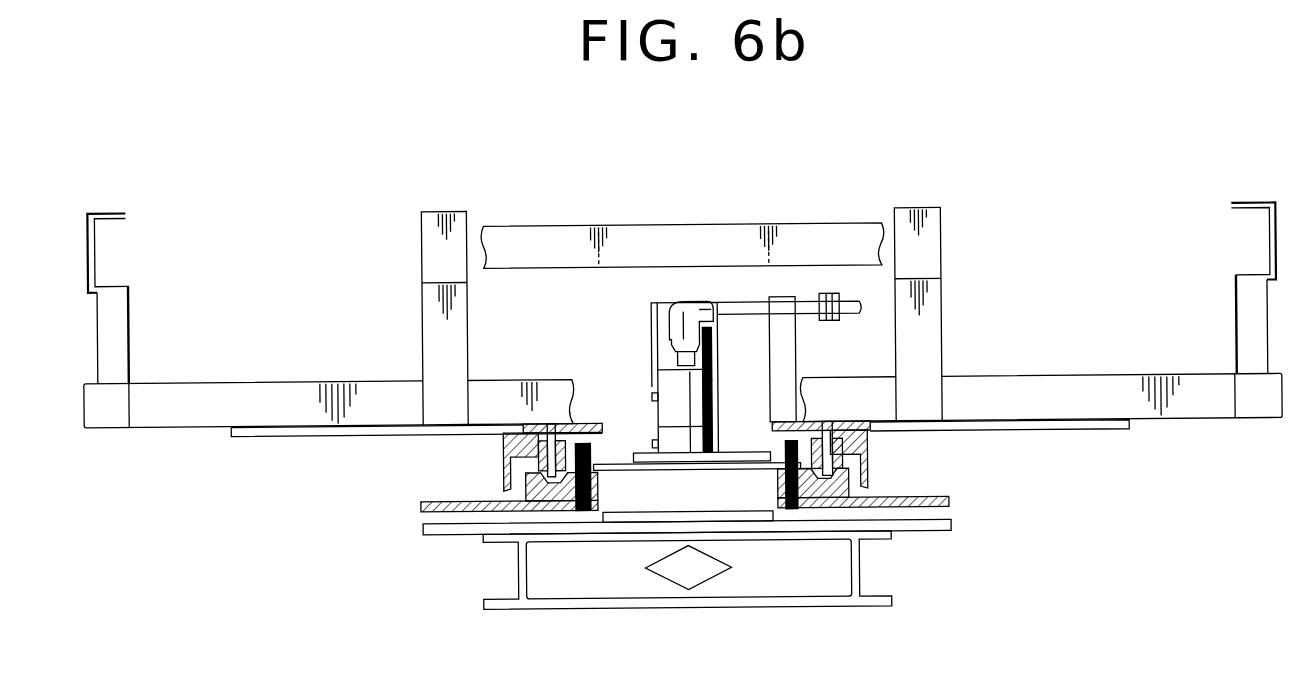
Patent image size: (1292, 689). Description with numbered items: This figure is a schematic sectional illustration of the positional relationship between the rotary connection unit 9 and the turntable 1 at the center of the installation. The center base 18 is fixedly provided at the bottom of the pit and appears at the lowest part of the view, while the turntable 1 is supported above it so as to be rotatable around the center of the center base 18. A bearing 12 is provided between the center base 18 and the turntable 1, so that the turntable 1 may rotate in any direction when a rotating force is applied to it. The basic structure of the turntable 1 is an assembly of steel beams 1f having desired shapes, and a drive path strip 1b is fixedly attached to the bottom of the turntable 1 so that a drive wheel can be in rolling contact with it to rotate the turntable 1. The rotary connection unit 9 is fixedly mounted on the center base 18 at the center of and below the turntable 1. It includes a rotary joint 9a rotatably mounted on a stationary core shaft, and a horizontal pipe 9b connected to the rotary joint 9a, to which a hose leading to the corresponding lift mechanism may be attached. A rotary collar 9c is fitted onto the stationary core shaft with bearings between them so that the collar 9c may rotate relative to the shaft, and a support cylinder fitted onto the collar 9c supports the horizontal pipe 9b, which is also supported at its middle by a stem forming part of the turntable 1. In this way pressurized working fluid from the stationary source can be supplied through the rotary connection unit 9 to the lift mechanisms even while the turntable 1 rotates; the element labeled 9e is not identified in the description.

The turntable 1 is at (1058, 255).
The steel beams 1f is at (392, 393).
The drive path strip 1b is at (1095, 434).
The rotary connection unit 9 is at (642, 348).
The rotary joint 9a is at (660, 312).
The horizontal pipe 9b is at (852, 318).
The rotary collar 9c is at (716, 428).
The piston rod upper part 9e is at (716, 372).
The bearing 12 is at (836, 462).
The center base 18 is at (766, 574).